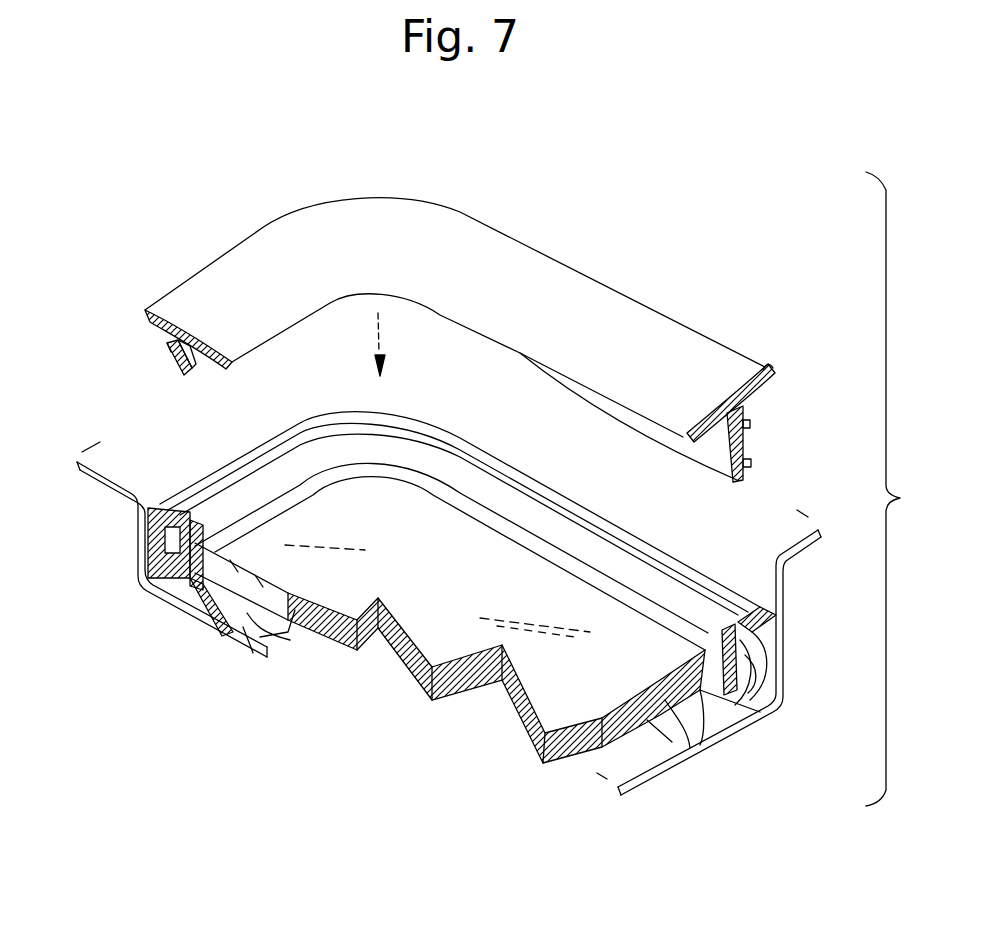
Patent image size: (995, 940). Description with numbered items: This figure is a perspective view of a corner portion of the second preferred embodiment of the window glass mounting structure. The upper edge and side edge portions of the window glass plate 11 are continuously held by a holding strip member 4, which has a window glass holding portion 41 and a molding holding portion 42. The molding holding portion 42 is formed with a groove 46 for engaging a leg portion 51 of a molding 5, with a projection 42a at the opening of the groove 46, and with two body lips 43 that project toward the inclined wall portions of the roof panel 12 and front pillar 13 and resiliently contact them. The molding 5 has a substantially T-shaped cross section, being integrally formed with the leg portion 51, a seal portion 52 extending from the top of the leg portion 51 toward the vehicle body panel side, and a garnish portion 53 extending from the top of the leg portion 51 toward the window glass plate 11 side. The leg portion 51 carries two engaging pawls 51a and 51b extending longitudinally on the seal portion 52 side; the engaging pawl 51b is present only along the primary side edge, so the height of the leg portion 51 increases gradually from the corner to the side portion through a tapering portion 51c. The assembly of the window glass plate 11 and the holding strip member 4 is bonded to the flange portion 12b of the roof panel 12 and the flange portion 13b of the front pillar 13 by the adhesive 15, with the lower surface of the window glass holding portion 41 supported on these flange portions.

The holding strip member 4 is at (478, 536).
The molding 5 is at (521, 272).
The window glass plate 11 is at (435, 638).
The roof panel 12 is at (103, 480).
The flange portion 12b is at (183, 617).
The front pillar 13 is at (808, 543).
The flange portion 13b is at (713, 733).
The adhesive 15 is at (250, 620).
The window glass holding portion 41 is at (750, 687).
The molding holding portion 42 is at (773, 657).
The projection 42a is at (778, 627).
The body lip 43 is at (142, 543).
The groove 46 is at (777, 680).
The leg portion 51 is at (713, 445).
The engaging pawl 51a is at (748, 425).
The engaging pawl 51b is at (752, 463).
The tapering portion 51c is at (523, 358).
The seal portion 52 is at (768, 366).
The garnish portion 53 is at (683, 433).